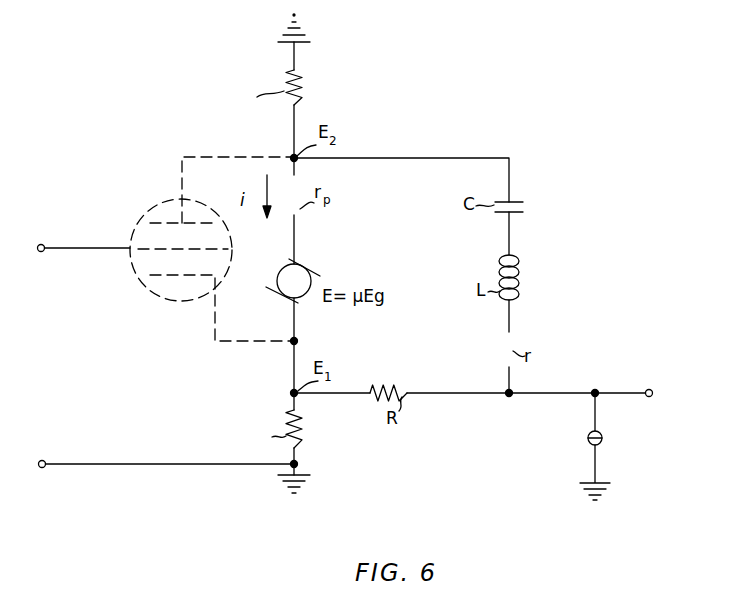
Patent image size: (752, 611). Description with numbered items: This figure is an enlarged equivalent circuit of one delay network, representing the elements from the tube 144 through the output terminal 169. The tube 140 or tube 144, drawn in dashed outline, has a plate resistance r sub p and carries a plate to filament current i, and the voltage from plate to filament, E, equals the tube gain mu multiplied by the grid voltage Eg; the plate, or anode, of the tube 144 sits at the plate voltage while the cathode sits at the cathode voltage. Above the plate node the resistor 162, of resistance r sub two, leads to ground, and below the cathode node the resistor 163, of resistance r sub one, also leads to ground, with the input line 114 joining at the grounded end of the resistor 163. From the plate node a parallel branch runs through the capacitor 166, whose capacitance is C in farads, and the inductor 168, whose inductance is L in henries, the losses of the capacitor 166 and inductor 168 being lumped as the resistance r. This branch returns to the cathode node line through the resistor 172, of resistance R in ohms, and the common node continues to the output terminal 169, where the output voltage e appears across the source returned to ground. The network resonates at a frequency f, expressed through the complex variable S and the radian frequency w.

The resistor 162 is at (299, 83).
The resistor 163 is at (300, 440).
The capacitor 166 is at (526, 200).
The inductor 168 is at (517, 299).
The resistor 172 is at (398, 378).
The output terminal 169 is at (650, 389).
The input line 114 is at (135, 462).
The tube 140 is at (166, 249).
The tube 144 is at (152, 206).